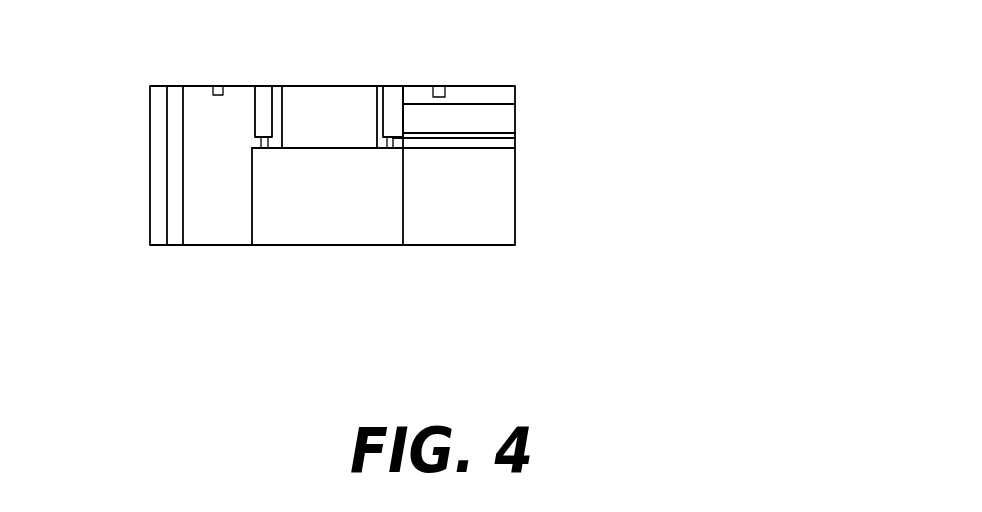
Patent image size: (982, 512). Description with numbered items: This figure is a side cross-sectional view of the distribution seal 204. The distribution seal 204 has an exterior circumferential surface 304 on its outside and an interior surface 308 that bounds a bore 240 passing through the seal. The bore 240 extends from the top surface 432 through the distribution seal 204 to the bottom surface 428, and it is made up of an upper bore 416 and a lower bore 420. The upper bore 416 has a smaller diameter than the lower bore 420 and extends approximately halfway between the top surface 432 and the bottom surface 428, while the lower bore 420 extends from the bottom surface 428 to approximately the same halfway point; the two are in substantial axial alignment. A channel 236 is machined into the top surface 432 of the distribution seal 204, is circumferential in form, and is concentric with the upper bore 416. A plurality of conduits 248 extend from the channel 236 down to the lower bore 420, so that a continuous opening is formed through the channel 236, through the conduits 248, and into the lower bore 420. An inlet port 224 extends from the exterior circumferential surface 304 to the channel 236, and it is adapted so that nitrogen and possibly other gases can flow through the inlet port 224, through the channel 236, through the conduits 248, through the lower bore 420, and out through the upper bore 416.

The distribution seal 204 is at (732, 70).
The inlet port 224 is at (515, 117).
The channel 236 is at (255, 132).
The bore 240 is at (340, 245).
The conduits 248 is at (258, 150).
The exterior circumferential surface 304 is at (515, 222).
The interior surface 308 is at (252, 197).
The upper bore 416 is at (293, 90).
The lower bore 420 is at (317, 230).
The bottom surface 428 is at (463, 245).
The top surface 432 is at (483, 88).